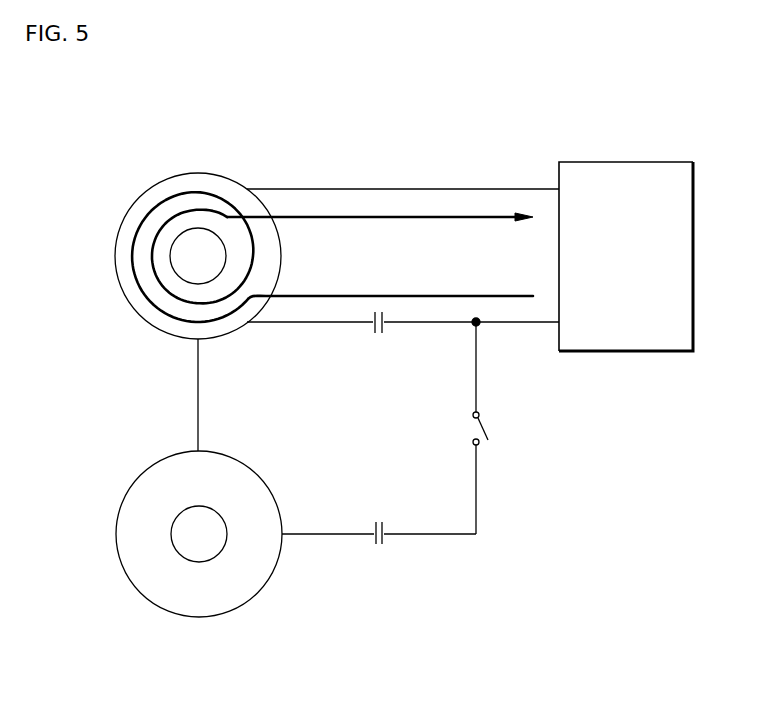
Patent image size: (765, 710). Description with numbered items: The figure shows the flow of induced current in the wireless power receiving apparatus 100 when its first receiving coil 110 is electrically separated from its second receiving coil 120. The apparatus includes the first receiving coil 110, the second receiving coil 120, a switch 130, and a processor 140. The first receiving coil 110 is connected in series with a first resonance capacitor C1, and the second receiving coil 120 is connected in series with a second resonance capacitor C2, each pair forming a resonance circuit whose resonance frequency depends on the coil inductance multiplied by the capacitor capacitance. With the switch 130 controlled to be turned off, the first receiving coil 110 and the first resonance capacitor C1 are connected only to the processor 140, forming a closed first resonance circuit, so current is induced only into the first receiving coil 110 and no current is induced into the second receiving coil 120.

The wireless power receiving apparatus 100 is at (79, 102).
The first receiving coil 110 is at (117, 255).
The second receiving coil 120 is at (117, 533).
The switch 130 is at (484, 423).
The processor 140 is at (650, 269).
The first resonance capacitor C1 is at (462, 337).
The second resonance capacitor C2 is at (379, 548).